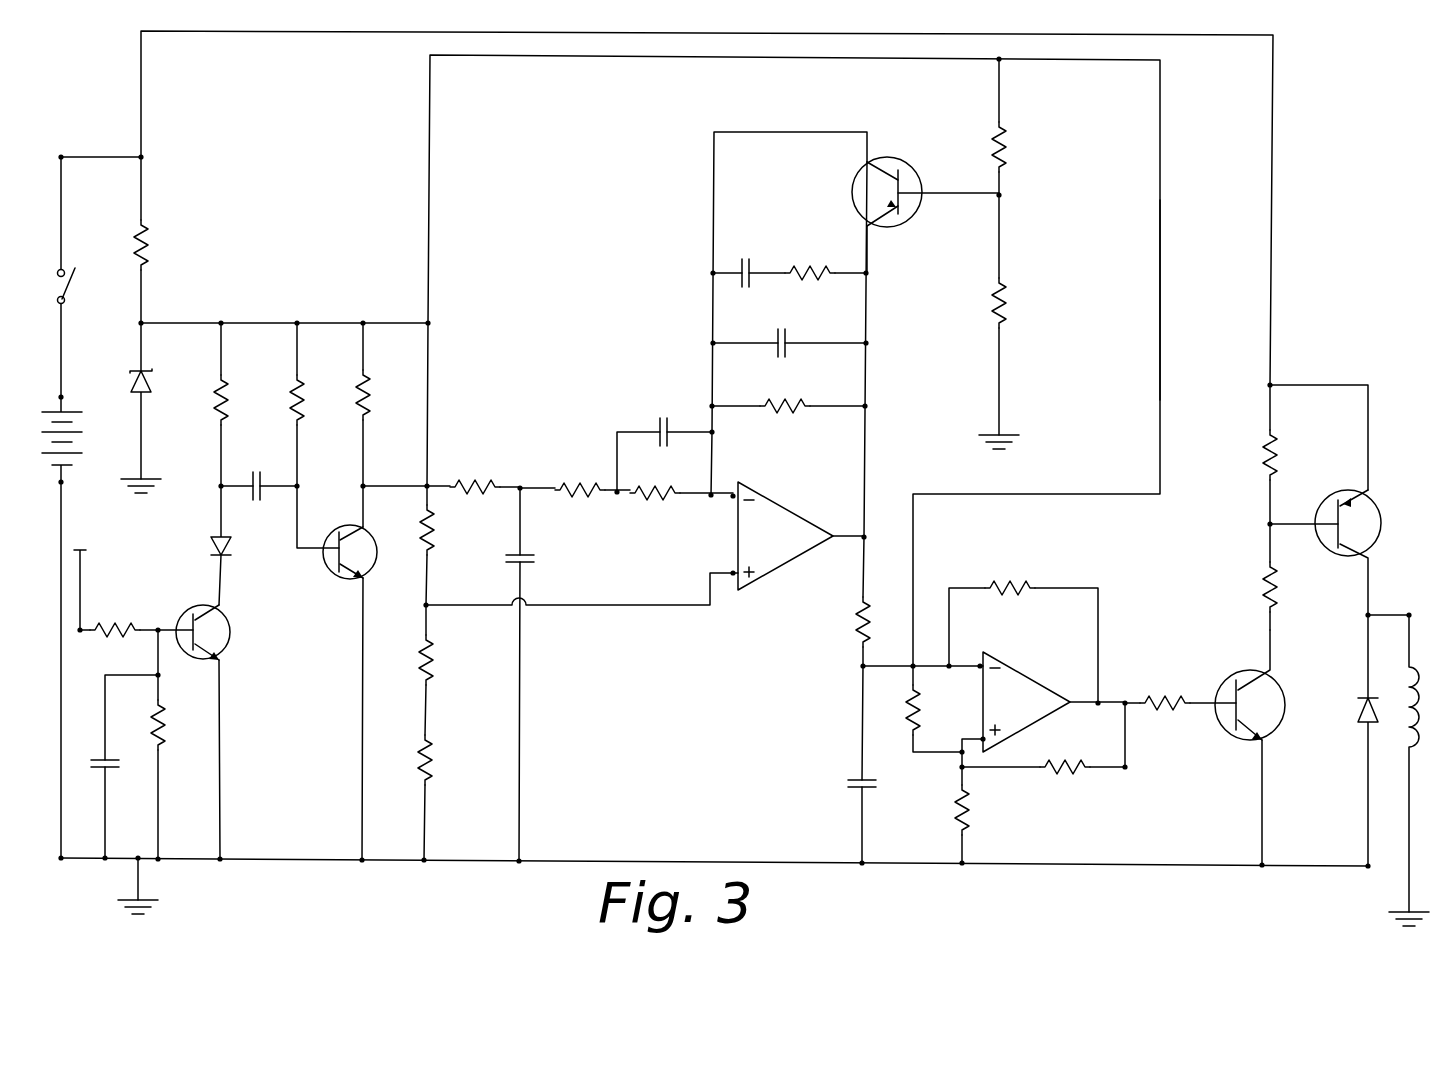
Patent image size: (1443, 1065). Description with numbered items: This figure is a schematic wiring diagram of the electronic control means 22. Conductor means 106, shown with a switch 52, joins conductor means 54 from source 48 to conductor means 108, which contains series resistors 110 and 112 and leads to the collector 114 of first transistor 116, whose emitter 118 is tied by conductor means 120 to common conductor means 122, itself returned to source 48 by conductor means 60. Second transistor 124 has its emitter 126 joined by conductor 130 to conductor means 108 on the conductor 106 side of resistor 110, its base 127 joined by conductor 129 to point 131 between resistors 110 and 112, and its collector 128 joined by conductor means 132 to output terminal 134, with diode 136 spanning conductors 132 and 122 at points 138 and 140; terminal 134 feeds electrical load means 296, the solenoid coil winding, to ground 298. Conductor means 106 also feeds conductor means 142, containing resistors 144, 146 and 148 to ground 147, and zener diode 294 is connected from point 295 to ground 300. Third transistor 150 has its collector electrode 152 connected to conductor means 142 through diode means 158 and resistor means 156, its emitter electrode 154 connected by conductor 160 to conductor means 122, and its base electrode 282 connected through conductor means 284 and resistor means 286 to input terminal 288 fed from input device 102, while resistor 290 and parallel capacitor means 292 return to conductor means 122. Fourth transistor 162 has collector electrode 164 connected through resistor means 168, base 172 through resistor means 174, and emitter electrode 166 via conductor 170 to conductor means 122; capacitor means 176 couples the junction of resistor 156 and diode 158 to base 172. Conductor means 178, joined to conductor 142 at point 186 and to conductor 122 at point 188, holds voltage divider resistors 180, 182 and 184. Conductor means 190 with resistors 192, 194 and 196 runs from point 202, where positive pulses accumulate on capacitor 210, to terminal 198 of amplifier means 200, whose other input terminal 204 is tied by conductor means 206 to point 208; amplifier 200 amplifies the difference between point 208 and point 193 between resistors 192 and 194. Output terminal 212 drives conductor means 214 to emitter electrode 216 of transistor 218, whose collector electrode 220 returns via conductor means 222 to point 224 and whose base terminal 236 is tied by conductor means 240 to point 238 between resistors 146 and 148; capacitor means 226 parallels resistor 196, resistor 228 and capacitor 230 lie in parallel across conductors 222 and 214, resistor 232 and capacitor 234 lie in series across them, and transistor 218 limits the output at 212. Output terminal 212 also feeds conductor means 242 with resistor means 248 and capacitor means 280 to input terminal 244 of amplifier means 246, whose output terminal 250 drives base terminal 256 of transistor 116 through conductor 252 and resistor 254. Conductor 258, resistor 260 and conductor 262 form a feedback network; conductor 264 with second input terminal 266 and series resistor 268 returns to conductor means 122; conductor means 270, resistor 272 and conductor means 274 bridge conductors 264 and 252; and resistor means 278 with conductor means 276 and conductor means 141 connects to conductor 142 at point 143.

The electronic control means 22 is at (1302, 302).
The source 48 is at (75, 440).
The switch blade 52 is at (76, 298).
The conductor means 54 is at (63, 217).
The conductor means 60 is at (63, 512).
The microphone 102 is at (85, 548).
The conductor means 106 is at (122, 157).
The conductor means 108 is at (265, 31).
The resistor 110 is at (1268, 455).
The resistor 112 is at (1268, 595).
The collector 114 is at (1262, 683).
The first transistor 116 is at (1284, 702).
The emitter 118 is at (1265, 745).
The conductor means 120 is at (1264, 810).
The conductor means 122 is at (298, 858).
The second transistor 124 is at (1376, 500).
The emitter 126 is at (1352, 497).
The base 127 is at (1325, 535).
The collector 128 is at (1398, 535).
The conductor 129 is at (1285, 524).
The conductor 130 is at (1320, 385).
The point 131 is at (1268, 524).
The conductor means 132 is at (1395, 615).
The terminal 134 is at (1407, 640).
The diode 136 is at (1358, 720).
The point 138 is at (1366, 600).
The point 140 is at (1390, 835).
The conductor means 141 is at (1160, 278).
The conductor means 142 is at (141, 185).
The point 143 is at (1003, 61).
The resistor 144 is at (141, 240).
The resistor 146 is at (1003, 148).
The ground 147 is at (1005, 432).
The resistor 148 is at (1003, 315).
The third transistor 150 is at (228, 632).
The collector 152 is at (245, 578).
The emitter electrode 154 is at (212, 648).
The resistor means 156 is at (215, 395).
The diode means 158 is at (255, 530).
The conductor 160 is at (220, 740).
The fourth transistor 162 is at (375, 543).
The collector electrode 164 is at (333, 501).
The emitter electrode 166 is at (366, 585).
The resistor means 168 is at (363, 385).
The conductor 170 is at (363, 740).
The base 172 is at (330, 578).
The resistor means 174 is at (297, 392).
The capacitor means 176 is at (257, 470).
The conductor means 178 is at (429, 365).
The resistor 180 is at (429, 525).
The resistor 182 is at (428, 660).
The resistor 184 is at (427, 760).
The point 186 is at (430, 322).
The point 188 is at (426, 858).
The conductor means 190 is at (440, 486).
The resistor means 192 is at (478, 486).
The point 193 is at (522, 487).
The resistor means 194 is at (600, 490).
The resistor means 196 is at (660, 495).
The terminal 198 is at (730, 500).
The amplifier means 200 is at (793, 562).
The point 202 is at (363, 486).
The input terminal 204 is at (722, 588).
The conductor means 206 is at (660, 607).
The point 208 is at (430, 607).
The capacitor 210 is at (525, 555).
The output terminal 212 is at (833, 536).
The conductor means 214 is at (866, 480).
The emitter electrode 216 is at (878, 215).
The transistor 218 is at (858, 172).
The collector electrode 220 is at (889, 166).
The conductor means 222 is at (714, 158).
The point 224 is at (713, 495).
The capacitor means 226 is at (657, 428).
The resistor 228 is at (790, 404).
The capacitor 230 is at (790, 340).
The resistor 232 is at (805, 273).
The capacitor 234 is at (742, 258).
The base terminal 236 is at (920, 193).
The point 238 is at (1003, 196).
The conductor means 240 is at (940, 195).
The conductor means 242 is at (885, 498).
The input terminal 244 is at (945, 695).
The amplifier means 246 is at (1022, 666).
The resistor means 248 is at (860, 635).
The output terminal 250 is at (1072, 700).
The conductor 252 is at (1128, 700).
The resistor 254 is at (1160, 703).
The base terminal 256 is at (1243, 725).
The conductor 258 is at (1098, 620).
The resistor 260 is at (1020, 588).
The conductor 262 is at (949, 615).
The conductor 264 is at (962, 750).
The second input terminal 266 is at (985, 742).
The series resistor 268 is at (965, 812).
The conductor means 270 is at (990, 767).
The resistor 272 is at (1065, 770).
The conductor means 274 is at (1125, 767).
The series conductor means 276 is at (935, 752).
The resistor means 278 is at (900, 710).
The capacitor means 280 is at (855, 783).
The base electrode 282 is at (158, 652).
The conductor means 284 is at (155, 630).
The resistor means 286 is at (115, 627).
The input terminal 288 is at (82, 628).
The resistor 290 is at (158, 720).
The capacitor means 292 is at (108, 770).
The zener diode 294 is at (150, 380).
The point 295 is at (143, 322).
The electrical load means 296 is at (1407, 740).
The ground 298 is at (1395, 910).
The ground 300 is at (158, 477).